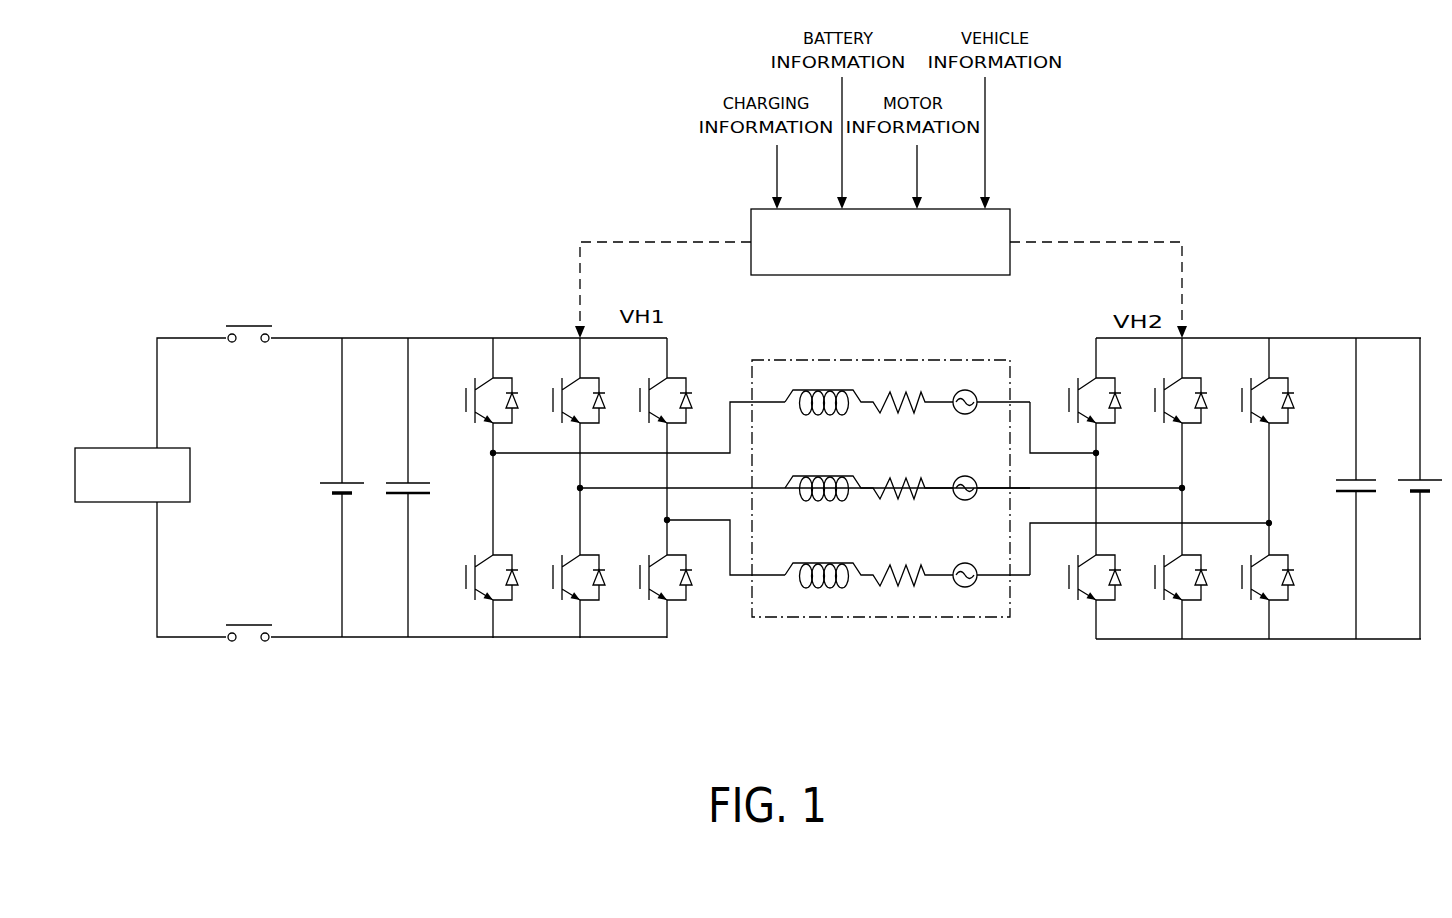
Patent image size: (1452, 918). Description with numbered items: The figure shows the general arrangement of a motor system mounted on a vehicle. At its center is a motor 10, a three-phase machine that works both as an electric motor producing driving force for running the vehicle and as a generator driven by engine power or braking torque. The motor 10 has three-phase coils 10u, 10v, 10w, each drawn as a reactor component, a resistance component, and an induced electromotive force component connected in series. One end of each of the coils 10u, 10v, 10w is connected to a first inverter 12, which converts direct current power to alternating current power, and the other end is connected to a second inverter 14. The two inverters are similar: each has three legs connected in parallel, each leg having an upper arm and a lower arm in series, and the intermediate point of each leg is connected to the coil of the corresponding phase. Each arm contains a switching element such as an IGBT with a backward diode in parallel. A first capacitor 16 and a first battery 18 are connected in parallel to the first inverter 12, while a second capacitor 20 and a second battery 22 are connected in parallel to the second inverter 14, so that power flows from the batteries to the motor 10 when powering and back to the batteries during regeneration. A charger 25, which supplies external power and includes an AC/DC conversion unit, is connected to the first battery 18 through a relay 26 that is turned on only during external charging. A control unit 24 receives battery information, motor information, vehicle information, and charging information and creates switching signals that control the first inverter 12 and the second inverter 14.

The motor 10 is at (891, 530).
The U-phase coil 10u is at (871, 372).
The V-phase coil 10v is at (874, 465).
The W-phase coil 10w is at (879, 549).
The first inverter 12 is at (543, 310).
The second inverter 14 is at (1220, 298).
The first capacitor 16 is at (411, 482).
The first battery 18 is at (345, 482).
The second capacitor 20 is at (1349, 476).
The second battery 22 is at (1414, 476).
The control unit 24 is at (1010, 225).
The charger 25 is at (190, 467).
The relay 26 is at (255, 324).